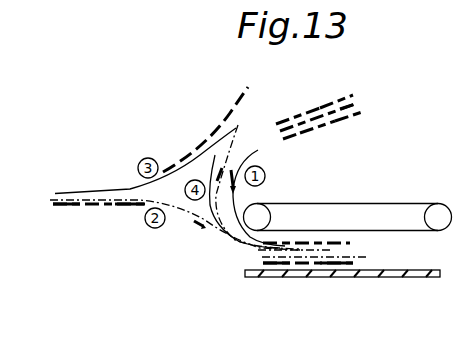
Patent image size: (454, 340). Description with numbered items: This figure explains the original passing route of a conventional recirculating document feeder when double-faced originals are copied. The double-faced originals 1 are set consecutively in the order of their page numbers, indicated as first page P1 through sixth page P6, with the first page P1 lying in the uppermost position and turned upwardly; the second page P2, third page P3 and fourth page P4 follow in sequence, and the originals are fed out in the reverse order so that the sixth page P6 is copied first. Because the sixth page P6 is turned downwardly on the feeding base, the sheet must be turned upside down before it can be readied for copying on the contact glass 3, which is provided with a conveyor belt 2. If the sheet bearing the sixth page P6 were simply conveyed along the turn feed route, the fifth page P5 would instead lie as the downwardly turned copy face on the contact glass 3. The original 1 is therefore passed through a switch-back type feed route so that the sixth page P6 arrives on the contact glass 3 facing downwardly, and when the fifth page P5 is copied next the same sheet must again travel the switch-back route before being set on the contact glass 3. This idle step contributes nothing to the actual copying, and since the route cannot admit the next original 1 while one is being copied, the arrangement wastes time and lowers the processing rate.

The double-faced original 1 is at (323, 105).
The conveyor belt 2 is at (407, 203).
The contact glass 3 is at (373, 278).
The first page P1 is at (341, 96).
The second page P2 is at (300, 120).
The third page P3 is at (358, 101).
The fourth page P4 is at (300, 128).
The fifth page P5 is at (350, 115).
The sixth page P6 is at (285, 130).